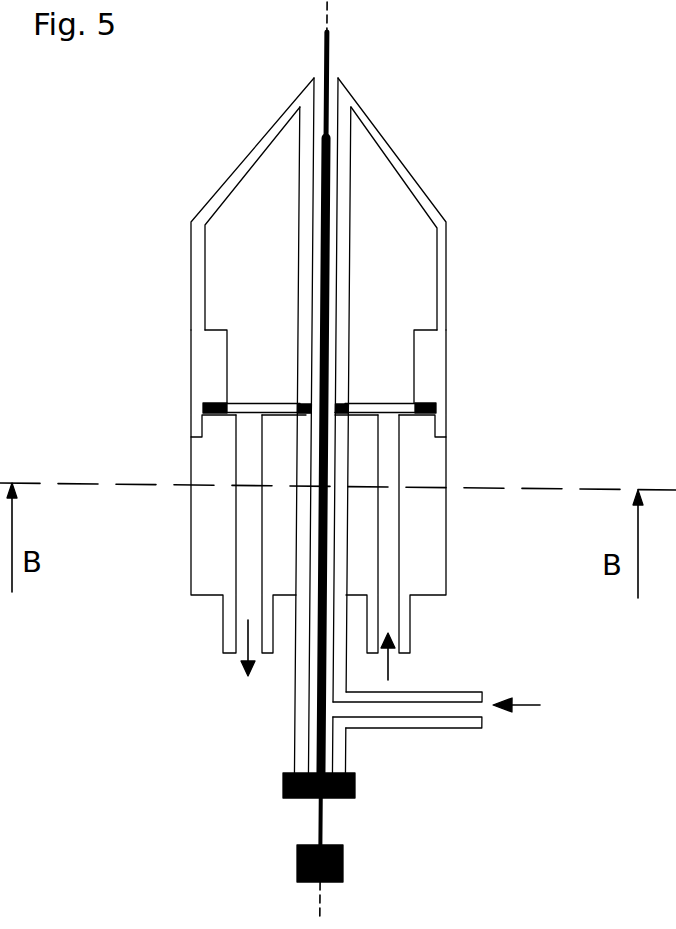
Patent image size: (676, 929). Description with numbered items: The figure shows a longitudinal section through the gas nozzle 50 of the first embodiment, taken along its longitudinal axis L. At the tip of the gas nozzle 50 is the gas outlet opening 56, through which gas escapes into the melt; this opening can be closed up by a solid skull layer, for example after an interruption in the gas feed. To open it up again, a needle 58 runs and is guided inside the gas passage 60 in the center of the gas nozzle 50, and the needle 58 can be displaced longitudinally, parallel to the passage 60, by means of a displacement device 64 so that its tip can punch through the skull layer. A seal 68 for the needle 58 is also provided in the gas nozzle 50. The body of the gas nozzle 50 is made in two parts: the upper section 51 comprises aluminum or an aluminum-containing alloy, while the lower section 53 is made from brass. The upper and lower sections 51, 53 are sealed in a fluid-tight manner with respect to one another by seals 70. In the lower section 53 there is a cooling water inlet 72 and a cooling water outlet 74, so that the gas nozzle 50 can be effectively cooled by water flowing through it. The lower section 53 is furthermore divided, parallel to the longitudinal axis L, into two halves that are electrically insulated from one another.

The gas nozzle 50 is at (447, 388).
The upper section 51 is at (447, 247).
The lower section 53 is at (447, 530).
The gas outlet opening 56 is at (333, 94).
The needle 58 is at (337, 749).
The gas passage 60 is at (313, 712).
The displacement device 64 is at (344, 865).
The seal 68 is at (356, 783).
The seals 70 is at (298, 408).
The cooling water inlet 72 is at (392, 663).
The cooling water outlet 74 is at (238, 657).
The longitudinal axis L is at (327, 912).